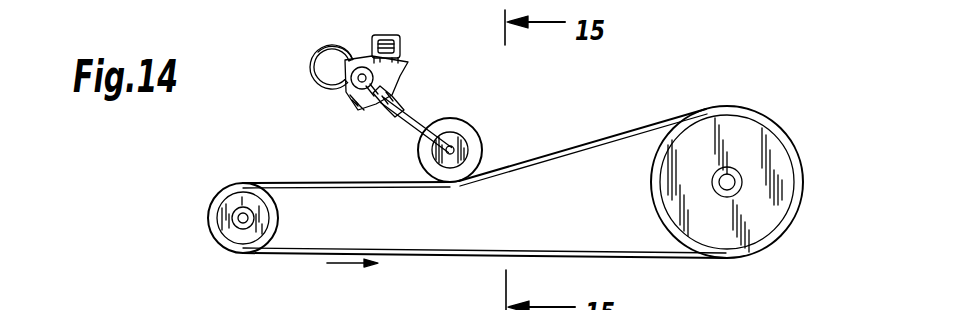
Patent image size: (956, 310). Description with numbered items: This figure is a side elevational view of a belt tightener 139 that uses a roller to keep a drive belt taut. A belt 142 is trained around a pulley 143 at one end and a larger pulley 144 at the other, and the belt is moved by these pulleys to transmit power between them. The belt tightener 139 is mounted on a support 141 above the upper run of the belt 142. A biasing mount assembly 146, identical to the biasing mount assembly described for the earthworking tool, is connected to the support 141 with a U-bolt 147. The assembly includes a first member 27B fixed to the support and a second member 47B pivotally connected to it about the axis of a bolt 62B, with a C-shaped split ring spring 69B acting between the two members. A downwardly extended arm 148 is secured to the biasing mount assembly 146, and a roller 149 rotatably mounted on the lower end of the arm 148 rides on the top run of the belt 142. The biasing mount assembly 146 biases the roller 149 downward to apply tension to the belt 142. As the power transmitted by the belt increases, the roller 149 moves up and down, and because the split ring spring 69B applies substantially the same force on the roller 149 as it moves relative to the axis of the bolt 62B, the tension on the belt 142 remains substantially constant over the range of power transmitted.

The belt tightener 139 is at (275, 123).
The support 141 is at (401, 46).
The belt 142 is at (596, 132).
The pulley 143 is at (246, 200).
The pulley 144 is at (765, 140).
The biasing mount assembly 146 is at (325, 40).
The U-bolt 147 is at (398, 36).
The arm 148 is at (407, 115).
The roller 149 is at (468, 133).
The first member 27B is at (376, 71).
The second member 47B is at (357, 101).
The bolt 62B is at (374, 81).
The split ring spring 69B is at (314, 81).